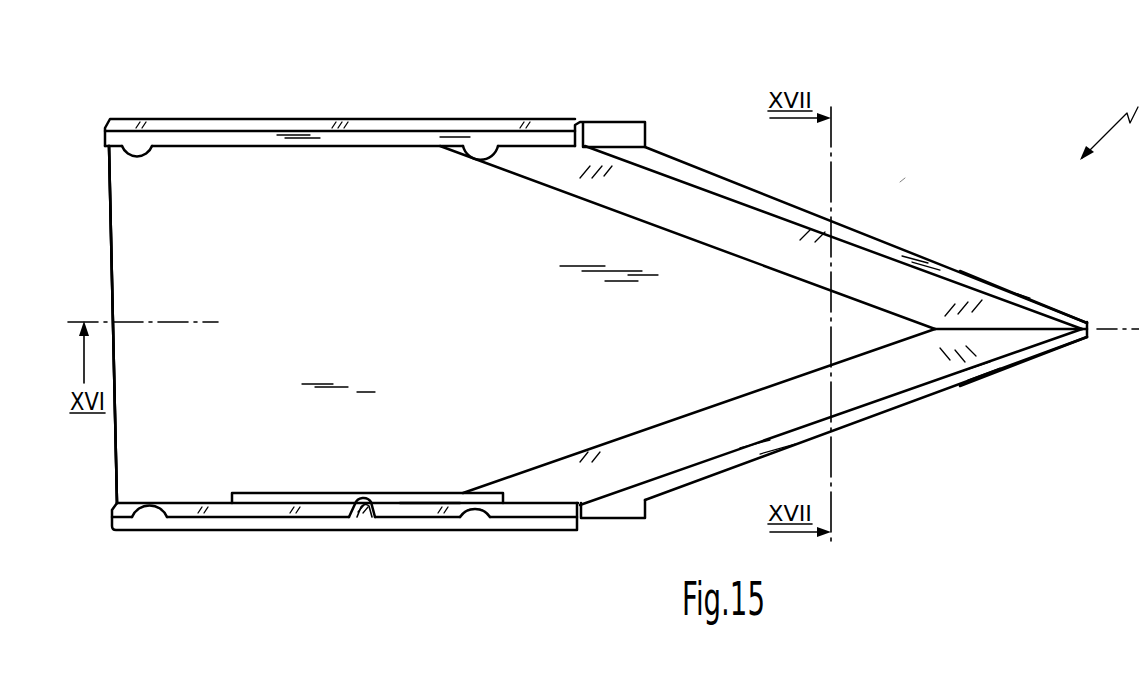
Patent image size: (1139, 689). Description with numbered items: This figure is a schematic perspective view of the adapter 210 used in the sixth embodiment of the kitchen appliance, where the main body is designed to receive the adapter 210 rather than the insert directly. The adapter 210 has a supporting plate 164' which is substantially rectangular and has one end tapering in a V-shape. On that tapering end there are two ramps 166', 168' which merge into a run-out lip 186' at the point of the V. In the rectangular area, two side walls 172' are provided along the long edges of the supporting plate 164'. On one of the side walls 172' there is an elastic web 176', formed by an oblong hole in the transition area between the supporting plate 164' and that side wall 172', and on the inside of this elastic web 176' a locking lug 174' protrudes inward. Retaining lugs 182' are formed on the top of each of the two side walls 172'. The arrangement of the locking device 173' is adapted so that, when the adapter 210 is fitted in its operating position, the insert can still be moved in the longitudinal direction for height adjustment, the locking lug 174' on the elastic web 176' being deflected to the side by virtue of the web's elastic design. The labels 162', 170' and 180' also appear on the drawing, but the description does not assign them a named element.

The reflector assembly 162' is at (121, 372).
The supporting plate 164' is at (545, 324).
The ramp 166' is at (836, 241).
The ramp 168' is at (833, 417).
The end edge 170' is at (92, 324).
The side wall 172' is at (375, 335).
The locking device 173' is at (362, 597).
The locking lug 174' is at (382, 555).
The elastic web 176' is at (367, 577).
The lower edge 180' is at (434, 586).
The retaining lug 182' is at (339, 392).
The run-out lip 186' is at (1033, 329).
The adapter 210 is at (906, 176).